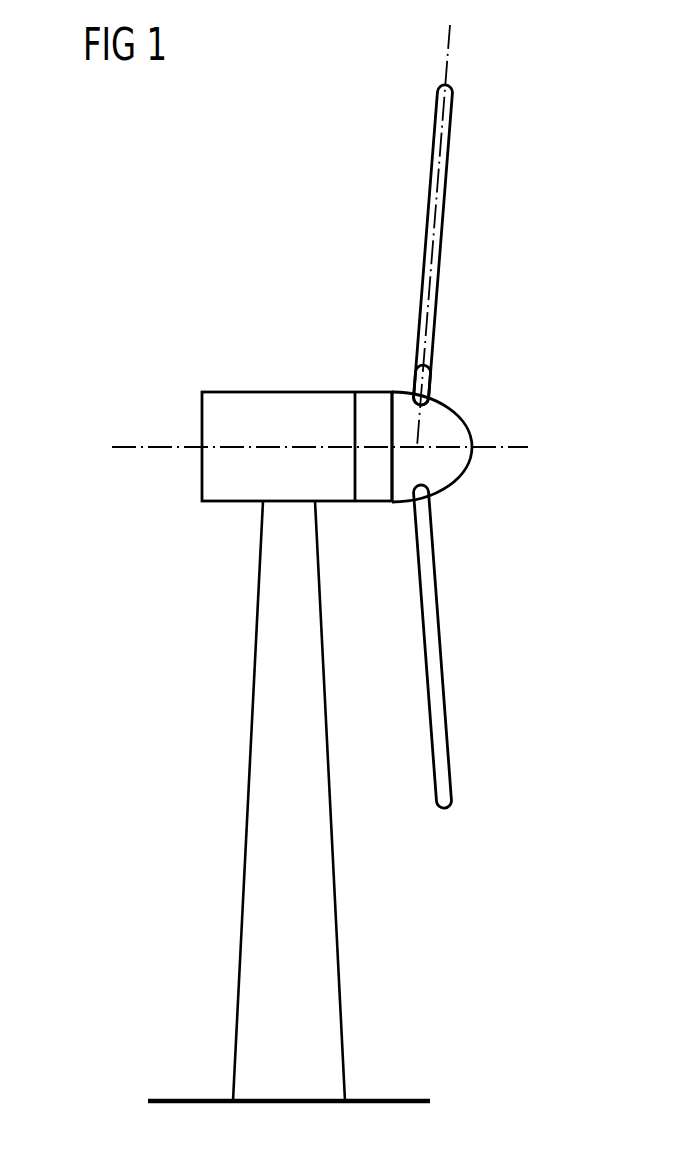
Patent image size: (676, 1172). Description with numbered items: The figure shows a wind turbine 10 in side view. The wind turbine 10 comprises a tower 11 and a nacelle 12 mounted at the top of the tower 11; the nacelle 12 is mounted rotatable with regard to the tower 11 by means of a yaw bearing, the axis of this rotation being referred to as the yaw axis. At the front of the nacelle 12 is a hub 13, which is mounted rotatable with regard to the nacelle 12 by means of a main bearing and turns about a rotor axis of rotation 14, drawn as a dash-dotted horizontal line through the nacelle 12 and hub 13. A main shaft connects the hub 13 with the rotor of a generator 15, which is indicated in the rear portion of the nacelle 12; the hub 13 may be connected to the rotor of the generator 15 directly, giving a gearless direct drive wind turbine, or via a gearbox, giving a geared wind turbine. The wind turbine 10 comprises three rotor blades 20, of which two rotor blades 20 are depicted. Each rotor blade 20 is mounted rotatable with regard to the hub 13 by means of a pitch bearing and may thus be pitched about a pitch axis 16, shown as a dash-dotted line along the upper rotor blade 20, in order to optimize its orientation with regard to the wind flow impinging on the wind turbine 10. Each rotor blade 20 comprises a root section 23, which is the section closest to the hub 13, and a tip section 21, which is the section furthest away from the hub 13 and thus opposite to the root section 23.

The wind turbine 10 is at (158, 664).
The tower 11 is at (325, 889).
The nacelle 12 is at (260, 405).
The hub 13 is at (457, 428).
The rotor axis of rotation 14 is at (125, 445).
The generator 15 is at (373, 487).
The pitch axis 16 is at (443, 48).
The rotor blade 20 is at (440, 232).
The tip section 21 is at (445, 100).
The root section 23 is at (430, 383).